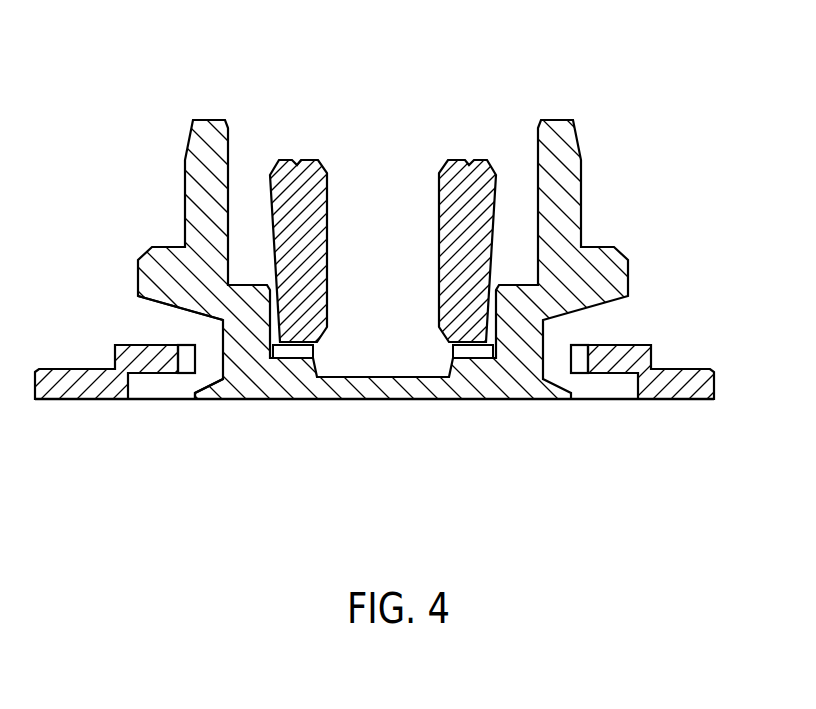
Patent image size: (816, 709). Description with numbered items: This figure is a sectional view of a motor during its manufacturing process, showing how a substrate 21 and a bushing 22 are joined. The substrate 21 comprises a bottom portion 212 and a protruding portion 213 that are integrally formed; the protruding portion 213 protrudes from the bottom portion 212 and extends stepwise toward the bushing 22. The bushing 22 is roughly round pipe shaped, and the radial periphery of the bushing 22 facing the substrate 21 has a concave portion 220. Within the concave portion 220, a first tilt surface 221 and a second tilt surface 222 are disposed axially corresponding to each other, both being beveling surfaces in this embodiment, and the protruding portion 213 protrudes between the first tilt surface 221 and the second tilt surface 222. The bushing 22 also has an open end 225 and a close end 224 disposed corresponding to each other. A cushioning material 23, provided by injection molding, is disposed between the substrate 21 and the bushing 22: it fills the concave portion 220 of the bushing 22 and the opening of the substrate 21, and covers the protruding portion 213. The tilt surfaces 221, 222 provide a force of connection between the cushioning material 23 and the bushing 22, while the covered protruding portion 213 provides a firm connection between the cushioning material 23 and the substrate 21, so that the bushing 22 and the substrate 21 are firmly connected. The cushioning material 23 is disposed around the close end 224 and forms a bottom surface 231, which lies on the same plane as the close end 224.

The substrate 21 is at (678, 388).
The bushing 22 is at (202, 177).
The cushioning material 23 is at (172, 387).
The bottom portion 212 is at (83, 382).
The protruding portion 213 is at (145, 362).
The concave portion 220 is at (207, 338).
The first tilt surface 221 is at (167, 305).
The second tilt surface 222 is at (215, 383).
The close end 224 is at (392, 390).
The open end 225 is at (412, 157).
The bottom surface 231 is at (597, 400).